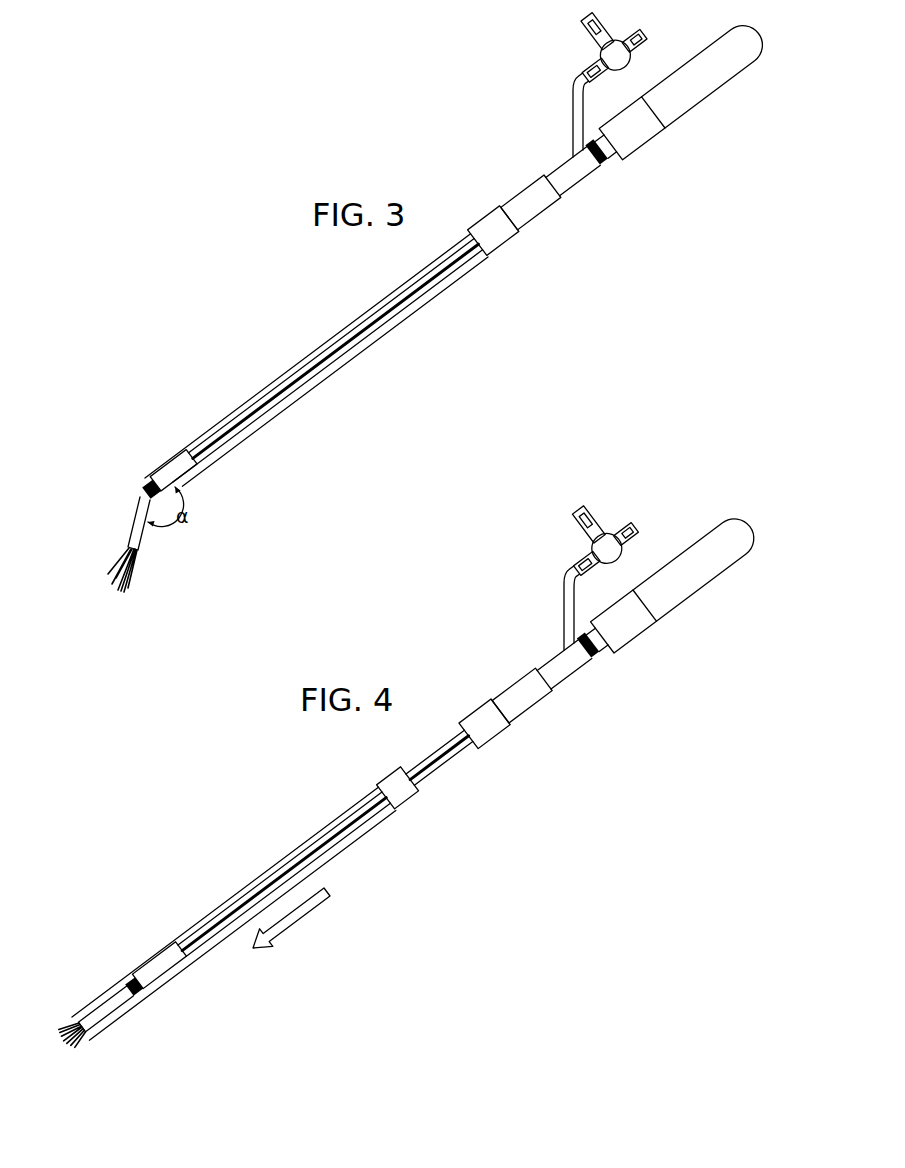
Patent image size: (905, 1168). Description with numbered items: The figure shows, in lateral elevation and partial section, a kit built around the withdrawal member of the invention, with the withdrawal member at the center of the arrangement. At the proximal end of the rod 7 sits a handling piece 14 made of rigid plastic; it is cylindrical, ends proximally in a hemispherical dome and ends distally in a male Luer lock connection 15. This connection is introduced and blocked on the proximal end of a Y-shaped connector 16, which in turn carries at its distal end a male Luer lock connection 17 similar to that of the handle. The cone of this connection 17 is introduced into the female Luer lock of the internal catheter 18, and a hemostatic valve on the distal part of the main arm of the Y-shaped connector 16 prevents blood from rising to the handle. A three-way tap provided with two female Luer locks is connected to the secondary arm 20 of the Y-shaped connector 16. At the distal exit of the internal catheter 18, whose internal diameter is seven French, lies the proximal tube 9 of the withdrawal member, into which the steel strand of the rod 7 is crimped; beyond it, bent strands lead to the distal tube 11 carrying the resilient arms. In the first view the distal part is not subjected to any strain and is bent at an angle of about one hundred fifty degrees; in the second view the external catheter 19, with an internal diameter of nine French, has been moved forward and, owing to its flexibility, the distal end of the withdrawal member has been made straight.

In FIG. 3, the rod 7 is at (292, 388).
In FIG. 3, the proximal tube 9 is at (167, 478).
In FIG. 4, the proximal tube 9 is at (157, 975).
In FIG. 3, the distal tube 11 is at (137, 533).
In FIG. 4, the distal tube 11 is at (108, 1013).
In FIG. 3, the handling piece 14 is at (712, 75).
In FIG. 4, the handling piece 14 is at (702, 567).
In FIG. 3, the male Luer lock connection 15 is at (640, 140).
In FIG. 4, the male Luer lock connection 15 is at (628, 630).
In FIG. 3, the Y-shaped connector 16 is at (578, 173).
In FIG. 4, the Y-shaped connector 16 is at (563, 668).
In FIG. 3, the male Luer lock connection 17 is at (533, 193).
In FIG. 4, the male Luer lock connection 17 is at (523, 687).
In FIG. 3, the internal catheter 18 is at (155, 475).
In FIG. 4, the internal catheter 18 is at (150, 962).
In FIG. 3, the external catheter 19 is at (407, 317).
In FIG. 4, the external catheter 19 is at (350, 847).
In FIG. 4, the secondary arm 20 is at (562, 628).